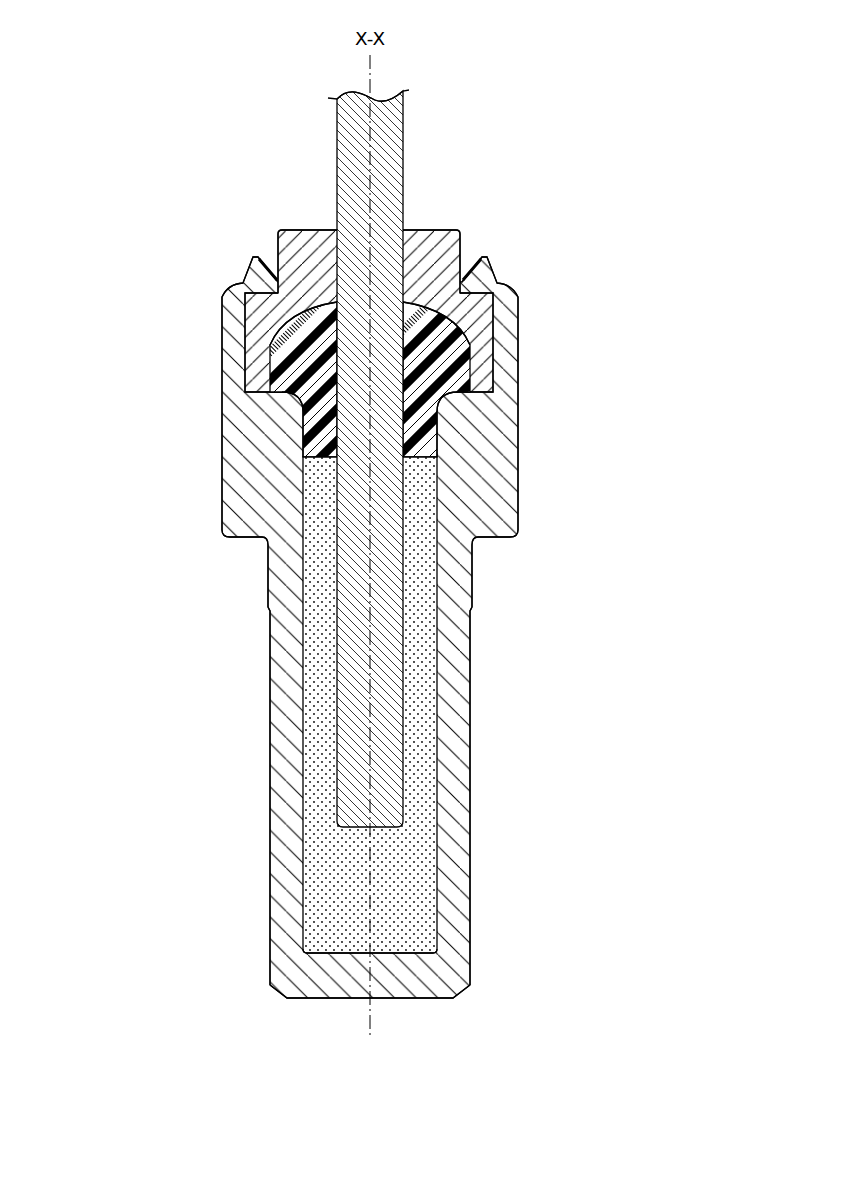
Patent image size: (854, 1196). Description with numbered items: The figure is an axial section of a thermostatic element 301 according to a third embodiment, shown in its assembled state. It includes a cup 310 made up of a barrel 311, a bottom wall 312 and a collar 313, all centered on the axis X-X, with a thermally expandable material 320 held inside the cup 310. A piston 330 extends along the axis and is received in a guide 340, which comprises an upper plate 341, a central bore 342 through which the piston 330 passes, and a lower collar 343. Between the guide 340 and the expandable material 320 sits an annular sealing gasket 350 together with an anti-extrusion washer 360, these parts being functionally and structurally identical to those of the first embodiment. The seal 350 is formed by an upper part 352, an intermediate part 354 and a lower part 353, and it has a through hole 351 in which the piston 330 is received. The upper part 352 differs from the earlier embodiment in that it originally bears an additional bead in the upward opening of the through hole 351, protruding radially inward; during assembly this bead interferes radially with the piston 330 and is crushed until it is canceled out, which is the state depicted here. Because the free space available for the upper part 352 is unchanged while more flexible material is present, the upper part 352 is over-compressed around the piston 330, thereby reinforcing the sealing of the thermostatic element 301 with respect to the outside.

The thermostatic element 301 is at (212, 261).
The cup 310 is at (102, 655).
The barrel 311 is at (290, 715).
The bottom wall 312 is at (307, 980).
The collar 313 is at (240, 493).
The thermally expandable material 320 is at (348, 937).
The piston 330 is at (383, 723).
The guide 340 is at (697, 255).
The upper plate 341 is at (442, 240).
The central bore 342 is at (388, 247).
The lower collar 343 is at (478, 330).
The annular sealing gasket 350 is at (135, 275).
The through hole 351 is at (393, 418).
The upper part 352 is at (293, 320).
The lower part 353 is at (273, 373).
The intermediate part 354 is at (280, 347).
The anti-extrusion washer 360 is at (326, 318).